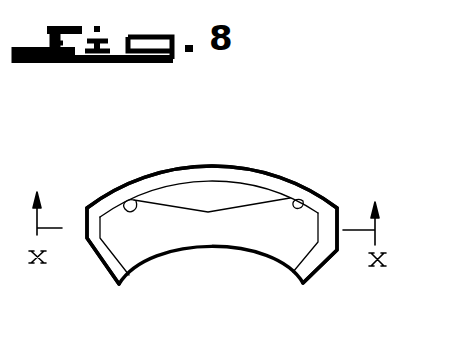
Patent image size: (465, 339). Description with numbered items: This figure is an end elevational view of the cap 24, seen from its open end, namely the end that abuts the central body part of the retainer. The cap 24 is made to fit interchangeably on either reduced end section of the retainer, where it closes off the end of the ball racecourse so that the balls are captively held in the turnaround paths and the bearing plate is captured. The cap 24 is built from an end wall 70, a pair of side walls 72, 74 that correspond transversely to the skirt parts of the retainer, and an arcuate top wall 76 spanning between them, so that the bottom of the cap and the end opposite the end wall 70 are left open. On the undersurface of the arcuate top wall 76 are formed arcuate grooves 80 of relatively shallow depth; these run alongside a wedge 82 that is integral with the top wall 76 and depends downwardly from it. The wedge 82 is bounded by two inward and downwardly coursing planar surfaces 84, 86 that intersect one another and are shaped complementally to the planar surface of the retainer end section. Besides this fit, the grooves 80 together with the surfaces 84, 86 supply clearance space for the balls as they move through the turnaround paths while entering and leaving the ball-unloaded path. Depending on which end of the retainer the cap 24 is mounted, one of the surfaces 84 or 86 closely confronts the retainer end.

The cap 24 is at (290, 176).
The end wall 70 is at (200, 234).
The side wall 72 is at (338, 223).
The side wall 74 is at (86, 237).
The arcuate top wall 76 is at (218, 171).
The arcuate grooves 80 is at (135, 202).
The wedge 82 is at (227, 204).
The planar surface 84 is at (267, 204).
The planar surface 86 is at (162, 203).